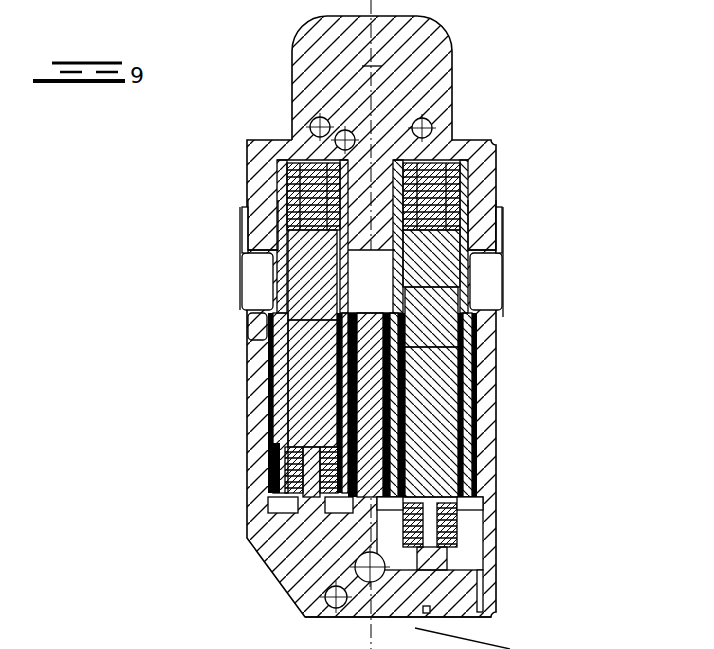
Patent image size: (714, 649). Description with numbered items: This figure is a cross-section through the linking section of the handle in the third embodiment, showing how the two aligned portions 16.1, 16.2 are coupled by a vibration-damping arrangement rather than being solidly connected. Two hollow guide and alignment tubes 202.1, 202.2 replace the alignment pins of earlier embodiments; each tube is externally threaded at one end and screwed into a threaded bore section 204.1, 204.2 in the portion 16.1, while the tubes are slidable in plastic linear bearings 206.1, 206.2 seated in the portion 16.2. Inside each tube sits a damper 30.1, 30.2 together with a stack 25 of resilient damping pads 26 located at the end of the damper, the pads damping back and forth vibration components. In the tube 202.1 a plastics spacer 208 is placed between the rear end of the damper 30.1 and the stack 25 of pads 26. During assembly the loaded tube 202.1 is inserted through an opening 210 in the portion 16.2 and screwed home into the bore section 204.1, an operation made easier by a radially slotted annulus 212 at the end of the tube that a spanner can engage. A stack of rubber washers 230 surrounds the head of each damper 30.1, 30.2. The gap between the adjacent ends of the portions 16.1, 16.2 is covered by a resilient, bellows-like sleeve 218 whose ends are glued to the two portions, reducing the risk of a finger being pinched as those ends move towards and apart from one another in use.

The linking section portion 16.1 is at (423, 88).
The linking section portion 16.2 is at (295, 560).
The stack of damping pads 25 is at (470, 203).
The damping pad 26 is at (470, 203).
The damper 30.1 is at (480, 388).
The damper 30.2 is at (300, 372).
The guide and alignment tube 202.1 is at (470, 215).
The guide and alignment tube 202.2 is at (277, 178).
The threaded bore section 204.1 is at (478, 225).
The threaded bore section 204.2 is at (262, 215).
The linear bearing 206.1 is at (480, 430).
The linear bearing 206.2 is at (263, 430).
The plastics spacer 208 is at (458, 287).
The opening 210 is at (477, 617).
The radially slotted annulus 212 is at (483, 503).
The bellows-like sleeve 218 is at (237, 308).
The stack of rubber washers 230 is at (455, 525).